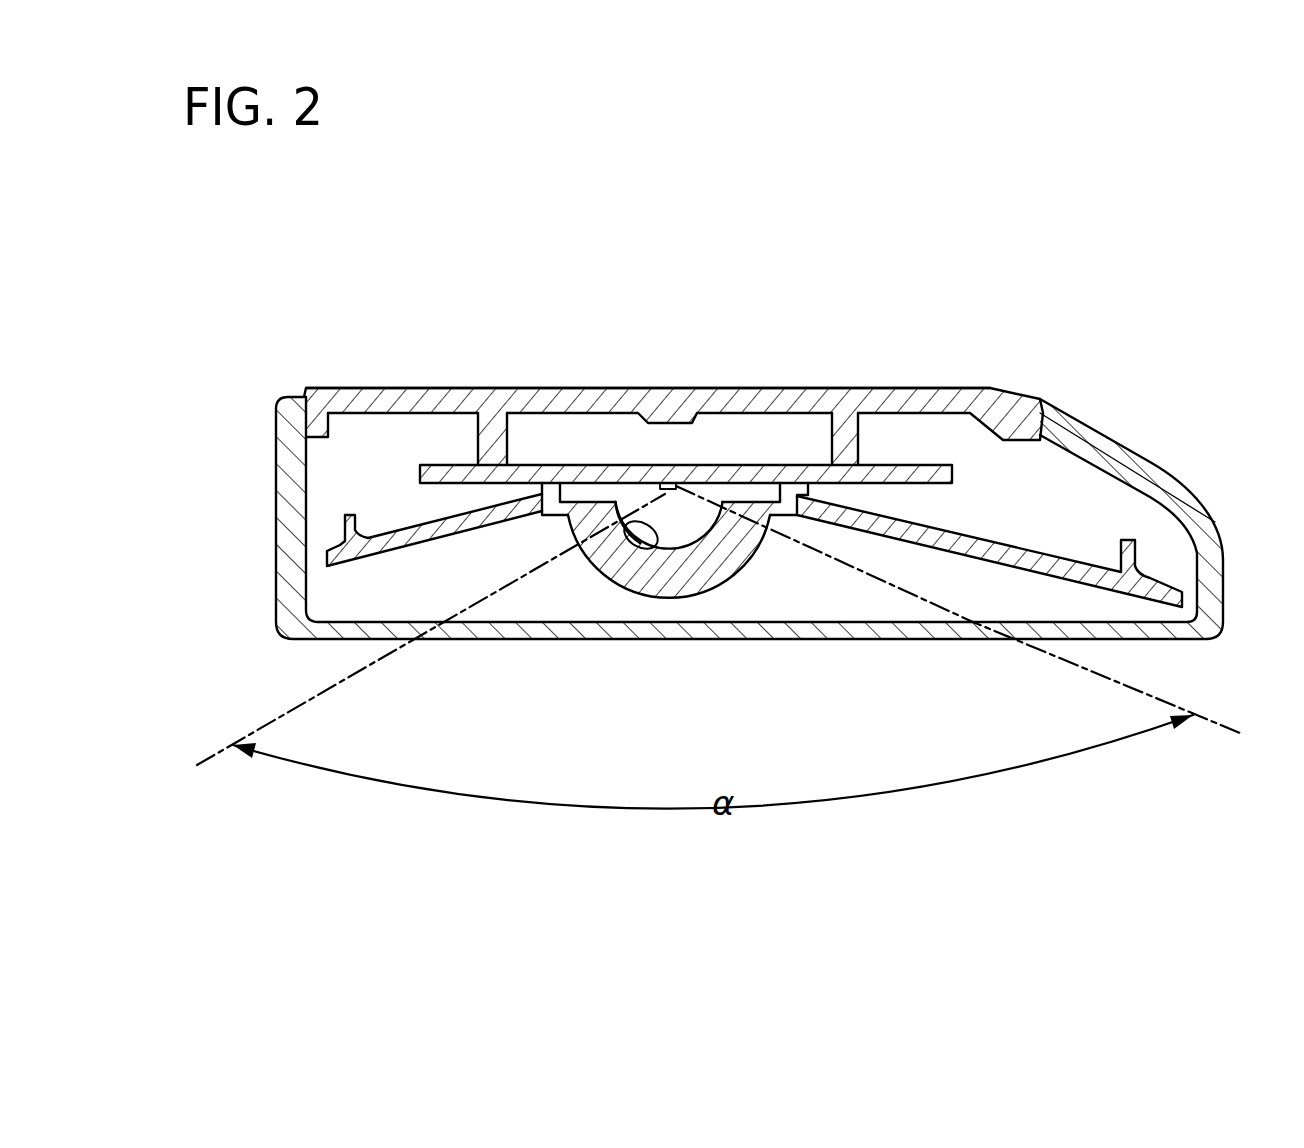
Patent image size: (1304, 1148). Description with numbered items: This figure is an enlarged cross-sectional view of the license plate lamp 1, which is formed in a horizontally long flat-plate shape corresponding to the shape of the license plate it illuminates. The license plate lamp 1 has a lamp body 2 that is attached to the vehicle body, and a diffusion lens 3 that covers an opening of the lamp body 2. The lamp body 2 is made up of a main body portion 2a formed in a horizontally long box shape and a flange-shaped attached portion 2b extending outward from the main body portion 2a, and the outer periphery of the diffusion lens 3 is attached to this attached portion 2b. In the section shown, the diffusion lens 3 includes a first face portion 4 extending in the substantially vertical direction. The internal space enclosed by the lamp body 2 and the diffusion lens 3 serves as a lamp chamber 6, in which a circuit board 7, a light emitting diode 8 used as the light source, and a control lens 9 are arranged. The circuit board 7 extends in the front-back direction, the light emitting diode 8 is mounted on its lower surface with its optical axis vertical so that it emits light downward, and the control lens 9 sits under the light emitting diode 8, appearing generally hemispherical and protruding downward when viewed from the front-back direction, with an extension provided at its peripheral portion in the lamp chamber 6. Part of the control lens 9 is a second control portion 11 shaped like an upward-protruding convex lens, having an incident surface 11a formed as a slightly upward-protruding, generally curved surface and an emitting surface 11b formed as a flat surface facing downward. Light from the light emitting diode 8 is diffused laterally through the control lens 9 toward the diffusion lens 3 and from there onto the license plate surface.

The license plate lamp 1 is at (921, 271).
The lamp body 2 is at (741, 388).
The main body portion 2a is at (556, 388).
The attached portion 2b is at (302, 392).
The diffusion lens 3 is at (1080, 430).
The first face portion 4 is at (748, 640).
The lamp chamber 6 is at (1044, 515).
The circuit board 7 is at (577, 480).
The light emitting diode 8 is at (660, 488).
The control lens 9 is at (655, 594).
The second control portion 11 is at (682, 593).
The incident surface 11a is at (632, 532).
The emitting surface 11b is at (620, 550).